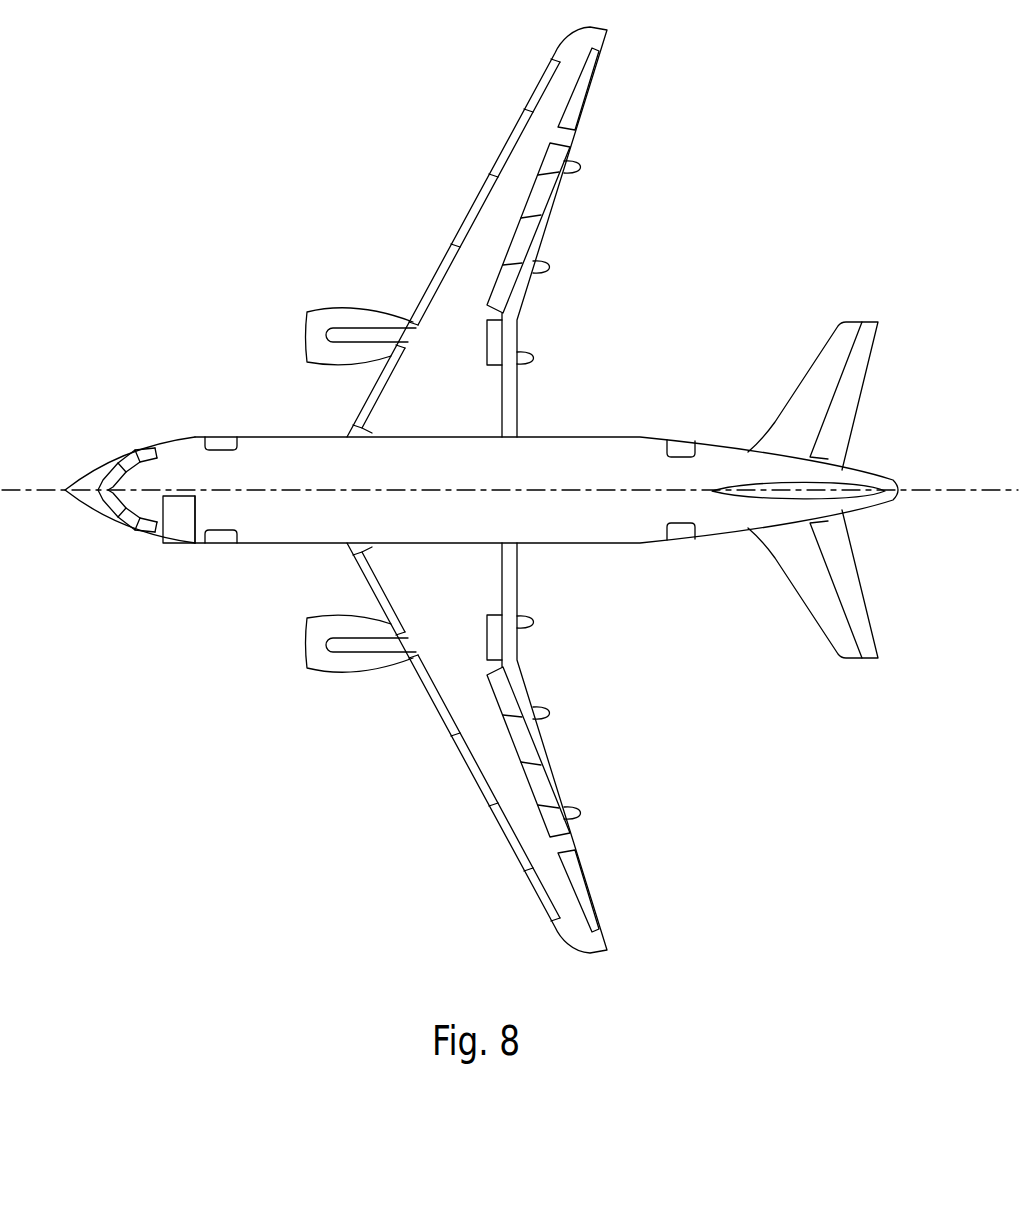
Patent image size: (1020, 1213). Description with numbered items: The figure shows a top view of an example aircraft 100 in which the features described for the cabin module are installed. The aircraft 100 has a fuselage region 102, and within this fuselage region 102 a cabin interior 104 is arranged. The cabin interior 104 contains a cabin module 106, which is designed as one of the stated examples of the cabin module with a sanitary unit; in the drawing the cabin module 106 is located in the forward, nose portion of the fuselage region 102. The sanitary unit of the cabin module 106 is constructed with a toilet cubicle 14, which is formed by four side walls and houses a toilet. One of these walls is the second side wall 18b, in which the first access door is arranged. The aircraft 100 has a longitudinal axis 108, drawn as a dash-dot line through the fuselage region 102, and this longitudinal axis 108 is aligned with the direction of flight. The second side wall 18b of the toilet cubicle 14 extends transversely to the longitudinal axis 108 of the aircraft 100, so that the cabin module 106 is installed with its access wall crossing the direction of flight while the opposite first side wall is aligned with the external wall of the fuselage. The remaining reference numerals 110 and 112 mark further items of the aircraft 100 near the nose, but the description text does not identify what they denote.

The aircraft 100 is at (510, 490).
The fuselage region 102 is at (298, 437).
The cabin interior 104 is at (328, 519).
The cabin module 106 is at (148, 549).
The longitudinal axis 108 is at (566, 490).
The door 110 is at (219, 543).
The radar antenna 112 is at (141, 487).
The toilet cubicle 14 is at (179, 519).
The second side wall 18b is at (197, 513).